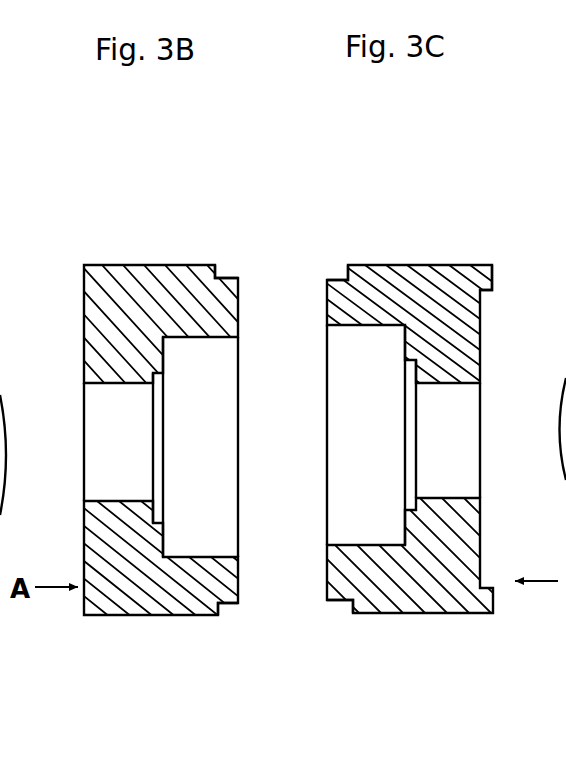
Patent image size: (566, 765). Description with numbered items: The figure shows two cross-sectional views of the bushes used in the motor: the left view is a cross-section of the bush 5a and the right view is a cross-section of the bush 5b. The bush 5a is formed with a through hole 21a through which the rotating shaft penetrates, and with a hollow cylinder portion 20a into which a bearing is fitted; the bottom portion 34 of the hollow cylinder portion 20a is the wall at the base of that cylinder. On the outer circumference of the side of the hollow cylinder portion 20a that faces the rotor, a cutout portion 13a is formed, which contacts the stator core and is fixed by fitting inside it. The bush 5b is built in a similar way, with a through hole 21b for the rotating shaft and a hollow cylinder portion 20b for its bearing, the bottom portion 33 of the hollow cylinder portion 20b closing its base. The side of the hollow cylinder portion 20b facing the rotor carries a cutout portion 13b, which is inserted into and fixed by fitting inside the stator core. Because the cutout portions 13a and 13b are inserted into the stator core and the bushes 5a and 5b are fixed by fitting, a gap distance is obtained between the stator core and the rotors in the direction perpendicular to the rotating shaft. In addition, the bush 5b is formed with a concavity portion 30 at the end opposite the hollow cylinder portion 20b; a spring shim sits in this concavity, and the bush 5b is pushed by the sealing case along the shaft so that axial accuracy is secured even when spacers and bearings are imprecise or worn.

In FIG. 3B, the bush 5a is at (105, 215).
In FIG. 3C, the bush 5b is at (460, 206).
In FIG. 3B, the cutout portion 13a is at (226, 275).
In FIG. 3C, the cutout portion 13b is at (338, 263).
In FIG. 3B, the hollow cylinder portion 20a is at (232, 530).
In FIG. 3C, the hollow cylinder portion 20b is at (340, 357).
In FIG. 3B, the through hole 21a is at (100, 415).
In FIG. 3C, the through hole 21b is at (468, 472).
In FIG. 3C, the concavity portion 30 is at (486, 310).
In FIG. 3C, the bottom portion 33 is at (408, 403).
In FIG. 3B, the bottom portion 34 is at (161, 417).